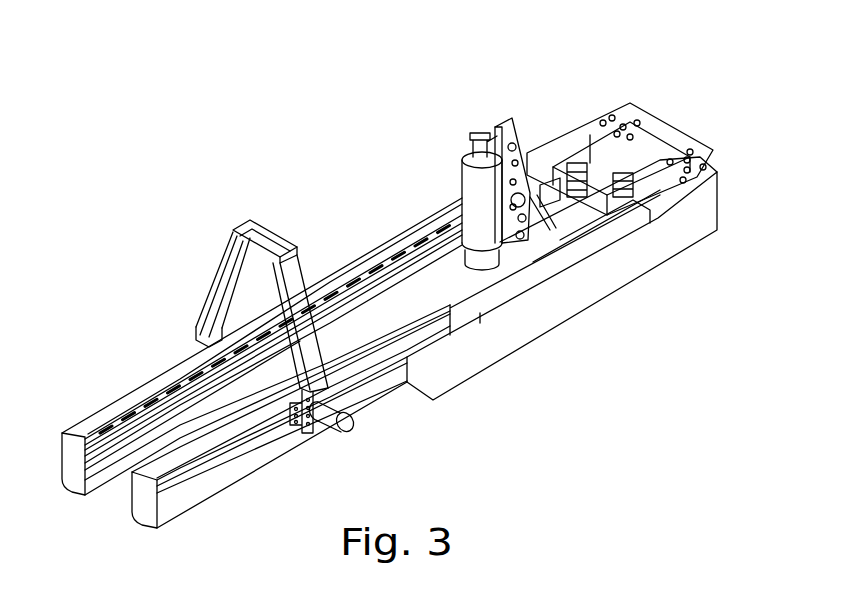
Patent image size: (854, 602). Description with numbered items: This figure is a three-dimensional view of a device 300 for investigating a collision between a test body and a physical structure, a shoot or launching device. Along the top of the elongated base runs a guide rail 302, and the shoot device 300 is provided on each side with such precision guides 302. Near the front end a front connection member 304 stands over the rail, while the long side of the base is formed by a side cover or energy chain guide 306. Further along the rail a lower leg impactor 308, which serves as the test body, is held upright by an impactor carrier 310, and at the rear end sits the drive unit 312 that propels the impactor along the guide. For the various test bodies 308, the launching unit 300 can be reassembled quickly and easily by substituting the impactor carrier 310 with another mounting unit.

The device 300 is at (693, 110).
The guide rail 302 is at (112, 433).
The front connection member 304 is at (213, 282).
The side cover or energy chain guide 306 is at (562, 303).
The lower leg impactor 308 is at (477, 205).
The impactor carrier 310 is at (503, 122).
The drive unit 312 is at (525, 158).